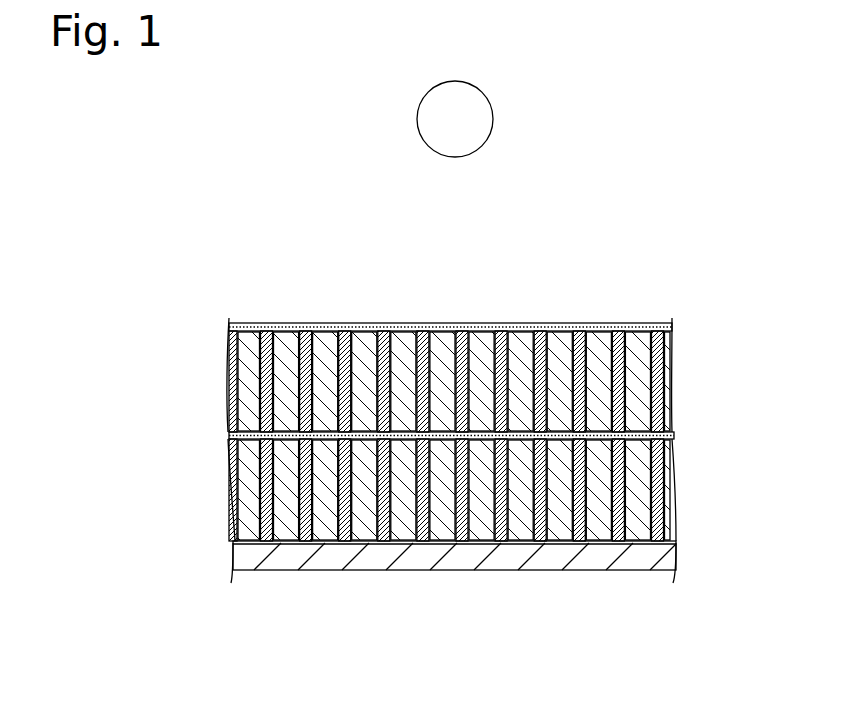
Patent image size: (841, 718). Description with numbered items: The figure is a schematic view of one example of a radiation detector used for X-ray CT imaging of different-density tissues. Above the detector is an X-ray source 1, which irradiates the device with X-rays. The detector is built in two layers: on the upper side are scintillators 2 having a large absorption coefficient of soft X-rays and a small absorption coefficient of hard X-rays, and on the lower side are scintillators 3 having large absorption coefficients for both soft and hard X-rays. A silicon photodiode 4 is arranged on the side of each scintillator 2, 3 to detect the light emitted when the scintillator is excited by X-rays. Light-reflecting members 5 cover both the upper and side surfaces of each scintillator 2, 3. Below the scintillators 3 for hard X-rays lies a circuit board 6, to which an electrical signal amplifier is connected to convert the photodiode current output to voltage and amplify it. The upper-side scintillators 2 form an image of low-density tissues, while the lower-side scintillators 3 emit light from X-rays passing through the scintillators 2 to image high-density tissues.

The X-ray source 1 is at (482, 117).
The scintillator for soft X-rays 2 is at (287, 340).
The scintillator for hard X-rays 3 is at (286, 530).
The silicon photodiode 4 is at (386, 333).
The light-reflecting member 5 is at (441, 325).
The circuit board 6 is at (502, 560).